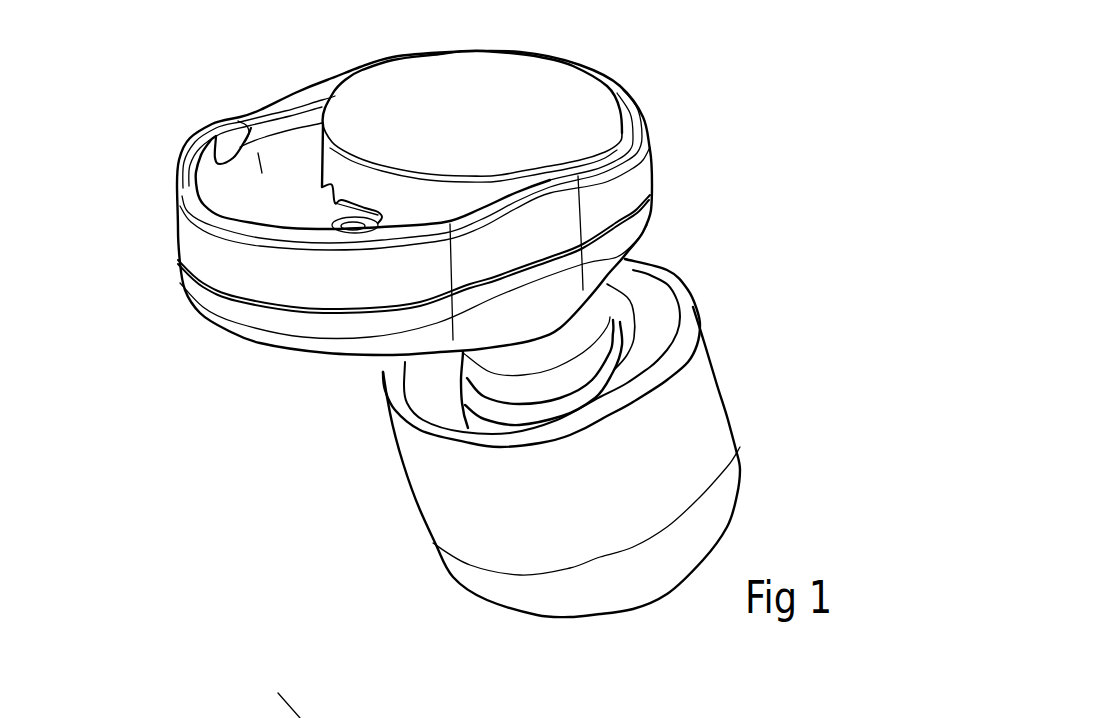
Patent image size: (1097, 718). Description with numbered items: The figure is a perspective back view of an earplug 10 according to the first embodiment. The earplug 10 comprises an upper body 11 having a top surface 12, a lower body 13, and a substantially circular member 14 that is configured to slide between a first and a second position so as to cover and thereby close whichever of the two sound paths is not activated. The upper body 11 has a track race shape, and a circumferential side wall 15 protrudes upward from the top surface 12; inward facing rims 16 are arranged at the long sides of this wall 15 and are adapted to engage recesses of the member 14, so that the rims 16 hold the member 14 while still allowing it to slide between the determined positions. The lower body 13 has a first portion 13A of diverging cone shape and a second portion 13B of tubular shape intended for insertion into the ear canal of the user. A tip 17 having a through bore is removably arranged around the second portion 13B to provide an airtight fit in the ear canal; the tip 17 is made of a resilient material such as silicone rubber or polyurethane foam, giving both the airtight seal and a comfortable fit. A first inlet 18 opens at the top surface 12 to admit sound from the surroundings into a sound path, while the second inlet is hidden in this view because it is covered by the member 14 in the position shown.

The earplug 10 is at (400, 592).
The upper body 11 is at (213, 243).
The top surface 12 is at (255, 203).
The lower body 13 is at (572, 340).
The first portion 13A is at (637, 231).
The second portion 13B is at (600, 377).
The circular member 14 is at (547, 103).
The circumferential side wall 15 is at (213, 180).
The inward facing rims 16 is at (240, 122).
The tip 17 is at (460, 517).
The first inlet 18 is at (355, 222).